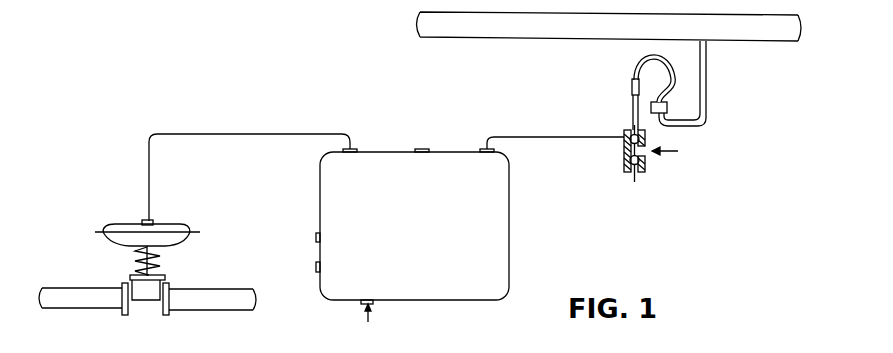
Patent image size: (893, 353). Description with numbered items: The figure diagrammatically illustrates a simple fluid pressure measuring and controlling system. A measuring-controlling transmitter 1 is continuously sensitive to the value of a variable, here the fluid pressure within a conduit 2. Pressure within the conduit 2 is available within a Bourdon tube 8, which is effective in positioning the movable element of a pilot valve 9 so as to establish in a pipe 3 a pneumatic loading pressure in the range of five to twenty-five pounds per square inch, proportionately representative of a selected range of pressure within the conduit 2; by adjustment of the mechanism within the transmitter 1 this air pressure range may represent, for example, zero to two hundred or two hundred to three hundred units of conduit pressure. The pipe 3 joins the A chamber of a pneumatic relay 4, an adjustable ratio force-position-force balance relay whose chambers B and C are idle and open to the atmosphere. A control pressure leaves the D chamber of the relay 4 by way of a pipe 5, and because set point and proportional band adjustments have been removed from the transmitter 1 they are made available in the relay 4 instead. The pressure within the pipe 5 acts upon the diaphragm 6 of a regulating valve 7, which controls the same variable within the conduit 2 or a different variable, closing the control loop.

The measuring-controlling transmitter 1 is at (734, 101).
The conduit 2 is at (527, 41).
The pipe 3 is at (543, 137).
The pneumatic relay 4 is at (421, 231).
The pipe 5 is at (149, 152).
The diaphragm 6 is at (166, 232).
The valve 7 is at (190, 271).
The Bourdon tube 8 is at (641, 65).
The pilot valve 9 is at (643, 163).